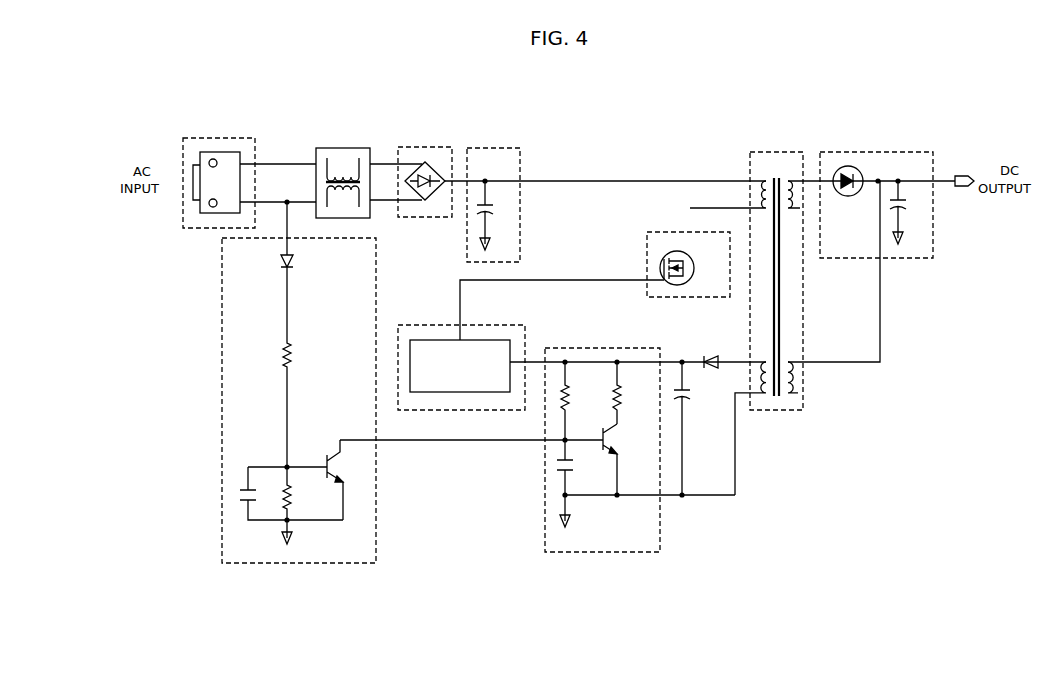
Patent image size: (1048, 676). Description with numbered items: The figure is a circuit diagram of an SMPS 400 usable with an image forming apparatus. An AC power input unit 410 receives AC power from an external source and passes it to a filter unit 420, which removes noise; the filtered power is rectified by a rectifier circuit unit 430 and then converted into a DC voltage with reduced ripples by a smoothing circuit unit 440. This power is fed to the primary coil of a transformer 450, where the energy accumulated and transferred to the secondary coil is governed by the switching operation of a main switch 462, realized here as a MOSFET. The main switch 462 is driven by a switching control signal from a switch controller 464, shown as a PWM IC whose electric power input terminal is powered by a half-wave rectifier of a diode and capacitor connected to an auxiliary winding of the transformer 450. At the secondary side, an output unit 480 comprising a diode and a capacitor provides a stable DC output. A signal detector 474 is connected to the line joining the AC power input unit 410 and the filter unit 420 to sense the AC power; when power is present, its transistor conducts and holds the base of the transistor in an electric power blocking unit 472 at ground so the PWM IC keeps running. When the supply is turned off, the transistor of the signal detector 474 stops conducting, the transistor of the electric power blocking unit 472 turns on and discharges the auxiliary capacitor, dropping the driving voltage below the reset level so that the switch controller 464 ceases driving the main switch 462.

The SMPS 400 is at (648, 130).
The AC power input unit 410 is at (222, 138).
The filter unit 420 is at (348, 146).
The rectifier circuit unit 430 is at (428, 145).
The smoothing circuit unit 440 is at (497, 146).
The transformer 450 is at (778, 150).
The main switch 462 is at (672, 232).
The switch controller 464 is at (488, 323).
The electric power blocking unit 472 is at (600, 347).
The signal detector 474 is at (376, 275).
The output unit 480 is at (873, 150).